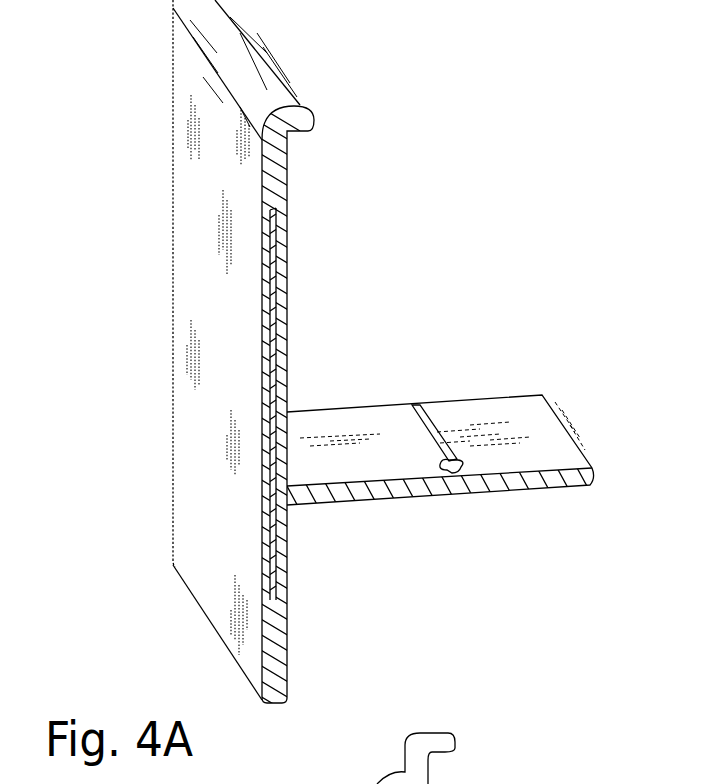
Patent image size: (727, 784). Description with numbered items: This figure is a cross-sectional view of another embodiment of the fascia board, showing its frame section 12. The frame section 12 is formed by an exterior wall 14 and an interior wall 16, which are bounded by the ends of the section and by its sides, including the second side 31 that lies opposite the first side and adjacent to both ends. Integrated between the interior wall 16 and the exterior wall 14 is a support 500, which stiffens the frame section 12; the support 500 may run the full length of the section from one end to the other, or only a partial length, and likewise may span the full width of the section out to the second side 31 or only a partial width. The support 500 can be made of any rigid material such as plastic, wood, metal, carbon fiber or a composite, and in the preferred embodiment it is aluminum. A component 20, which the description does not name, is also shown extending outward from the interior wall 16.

The frame section 12 is at (184, 43).
The exterior wall 14 is at (195, 238).
The interior wall 16 is at (288, 296).
The shelf 20 is at (474, 420).
The second side 31 is at (182, 438).
The support 500 is at (285, 218).